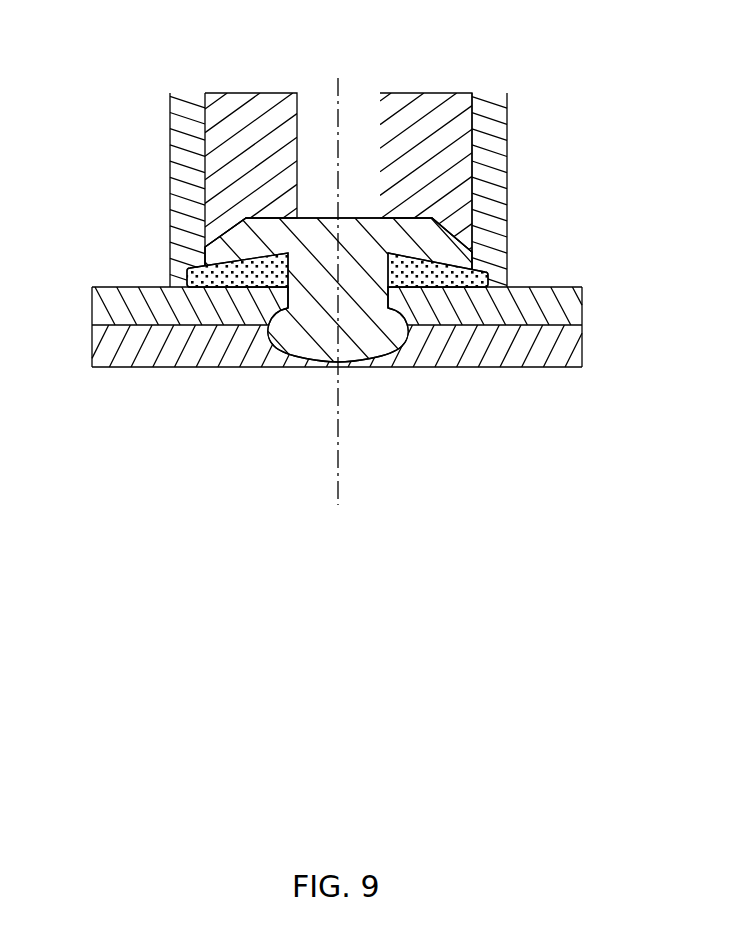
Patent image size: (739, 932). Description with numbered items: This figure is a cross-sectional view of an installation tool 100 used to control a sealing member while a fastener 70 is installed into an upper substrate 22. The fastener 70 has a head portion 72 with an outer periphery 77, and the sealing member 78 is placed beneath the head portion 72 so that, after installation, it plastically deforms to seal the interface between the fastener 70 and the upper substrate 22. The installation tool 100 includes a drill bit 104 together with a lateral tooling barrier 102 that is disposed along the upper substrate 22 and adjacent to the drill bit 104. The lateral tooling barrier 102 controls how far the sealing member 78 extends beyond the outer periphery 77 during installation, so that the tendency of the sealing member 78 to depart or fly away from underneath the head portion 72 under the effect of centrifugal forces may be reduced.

The upper substrate 22 is at (135, 297).
The fastener 70 is at (323, 216).
The head portion 72 is at (219, 272).
The outer periphery 77 is at (475, 260).
The sealing member 78 is at (472, 318).
The installation tool 100 is at (323, 155).
The lateral tooling barrier 102 is at (492, 142).
The drill bit 104 is at (428, 123).